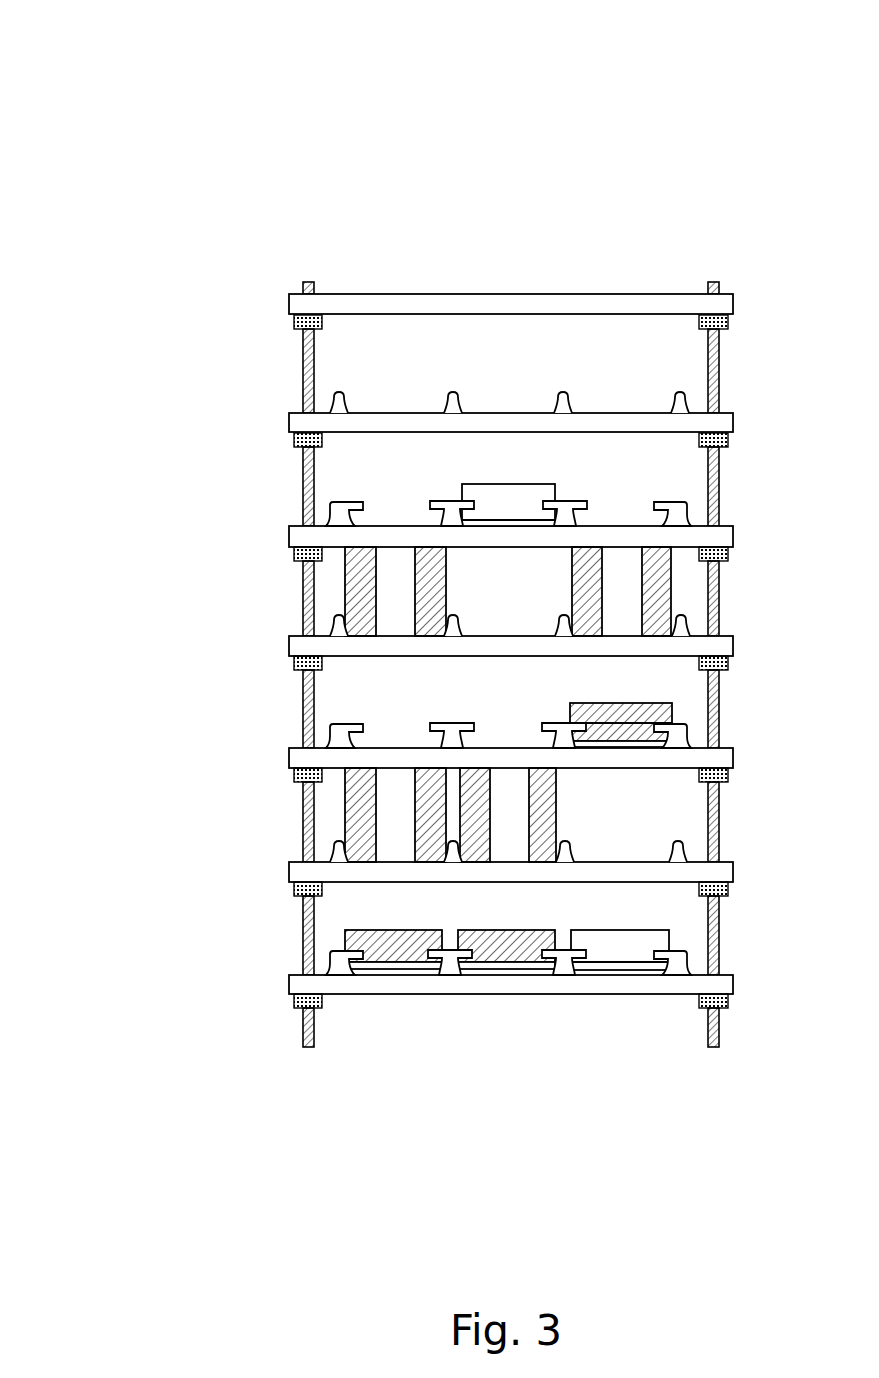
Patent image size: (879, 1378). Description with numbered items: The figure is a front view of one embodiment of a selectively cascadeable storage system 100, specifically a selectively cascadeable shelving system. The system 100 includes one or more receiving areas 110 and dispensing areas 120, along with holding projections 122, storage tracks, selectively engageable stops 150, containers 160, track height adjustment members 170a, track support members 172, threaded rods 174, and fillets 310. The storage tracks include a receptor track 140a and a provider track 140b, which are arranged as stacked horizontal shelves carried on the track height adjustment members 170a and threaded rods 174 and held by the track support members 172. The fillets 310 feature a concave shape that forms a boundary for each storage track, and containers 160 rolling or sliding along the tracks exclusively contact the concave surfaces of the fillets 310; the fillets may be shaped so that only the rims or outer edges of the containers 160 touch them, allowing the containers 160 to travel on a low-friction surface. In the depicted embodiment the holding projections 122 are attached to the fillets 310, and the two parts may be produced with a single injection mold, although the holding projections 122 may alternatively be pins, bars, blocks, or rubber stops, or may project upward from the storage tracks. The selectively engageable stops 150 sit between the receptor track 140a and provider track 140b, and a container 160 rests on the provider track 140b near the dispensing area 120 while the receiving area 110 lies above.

The selectively cascadeable storage system 100 is at (82, 50).
The receiving area 110 is at (390, 383).
The dispensing area 120 is at (640, 689).
The holding projection 122 is at (366, 500).
The receptor track 140a is at (734, 418).
The provider track 140b is at (291, 532).
The selectively engageable stop 150 is at (558, 808).
The container 160 is at (572, 707).
The track height adjustment member 170a is at (302, 472).
The track support member 172 is at (728, 549).
The threaded rod 174 is at (721, 488).
The fillet 310 is at (560, 392).